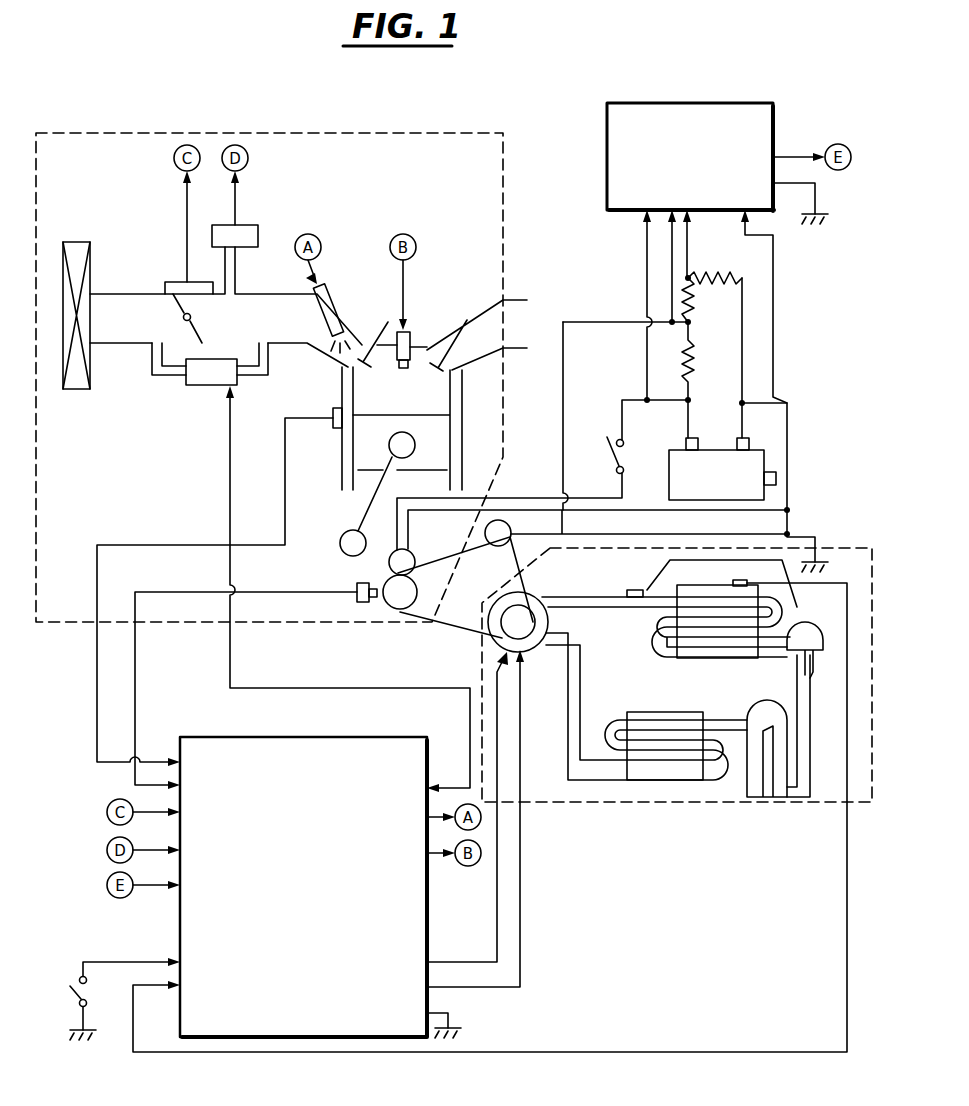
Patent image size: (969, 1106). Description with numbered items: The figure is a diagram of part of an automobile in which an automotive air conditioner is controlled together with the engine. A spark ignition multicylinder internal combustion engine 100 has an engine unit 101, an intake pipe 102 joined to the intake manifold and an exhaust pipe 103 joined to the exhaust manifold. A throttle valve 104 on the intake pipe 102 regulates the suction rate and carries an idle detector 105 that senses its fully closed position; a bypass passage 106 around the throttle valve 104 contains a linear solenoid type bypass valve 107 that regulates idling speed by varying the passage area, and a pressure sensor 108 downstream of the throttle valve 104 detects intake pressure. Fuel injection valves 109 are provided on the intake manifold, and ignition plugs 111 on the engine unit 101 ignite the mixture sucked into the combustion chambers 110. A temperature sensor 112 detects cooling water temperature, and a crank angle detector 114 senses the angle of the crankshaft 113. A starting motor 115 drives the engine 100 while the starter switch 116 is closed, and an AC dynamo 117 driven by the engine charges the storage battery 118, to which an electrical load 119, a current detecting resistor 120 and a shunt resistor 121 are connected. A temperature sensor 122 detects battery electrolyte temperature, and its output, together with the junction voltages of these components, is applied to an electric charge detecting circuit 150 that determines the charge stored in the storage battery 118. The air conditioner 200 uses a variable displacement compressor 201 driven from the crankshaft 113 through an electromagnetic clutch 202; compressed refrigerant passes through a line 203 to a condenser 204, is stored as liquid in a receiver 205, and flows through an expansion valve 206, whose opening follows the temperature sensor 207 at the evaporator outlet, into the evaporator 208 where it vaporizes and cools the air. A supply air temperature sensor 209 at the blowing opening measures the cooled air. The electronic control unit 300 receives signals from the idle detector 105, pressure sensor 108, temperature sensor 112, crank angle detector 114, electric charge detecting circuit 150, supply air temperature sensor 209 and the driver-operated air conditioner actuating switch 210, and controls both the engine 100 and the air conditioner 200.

The engine 100 is at (462, 128).
The engine unit 101 is at (426, 406).
The intake pipe 102 is at (243, 294).
The exhaust pipe 103 is at (517, 300).
The throttle valve 104 is at (183, 317).
The idle detector 105 is at (180, 282).
The bypass passage 106 is at (153, 375).
The bypass valve 107 is at (200, 386).
The pressure sensor 108 is at (248, 228).
The fuel injection valve 109 is at (337, 290).
The combustion chamber 110 is at (355, 392).
The ignition plug 111 is at (410, 334).
The temperature sensor 112 is at (336, 428).
The crankshaft 113 is at (388, 582).
The crank angle detector 114 is at (357, 590).
The starting motor 115 is at (408, 551).
The starter switch 116 is at (624, 467).
The AC dynamo 117 is at (498, 546).
The storage battery 118 is at (722, 450).
The electrical load 119 is at (712, 278).
The current detecting resistor 120 is at (692, 302).
The shunt resistor 121 is at (694, 350).
The temperature sensor 122 is at (778, 478).
The electric charge detecting circuit 150 is at (695, 103).
The air conditioner 200 is at (822, 546).
The compressor 201 is at (534, 648).
The electromagnetic clutch 202 is at (530, 620).
The line 203 is at (666, 640).
The condenser 204 is at (640, 778).
The receiver 205 is at (758, 768).
The expansion valve 206 is at (798, 655).
The temperature sensor 207 is at (635, 589).
The evaporator 208 is at (718, 658).
The supply air temperature sensor 209 is at (733, 583).
The air conditioner actuating switch 210 is at (68, 986).
The electronic control unit 300 is at (427, 1000).